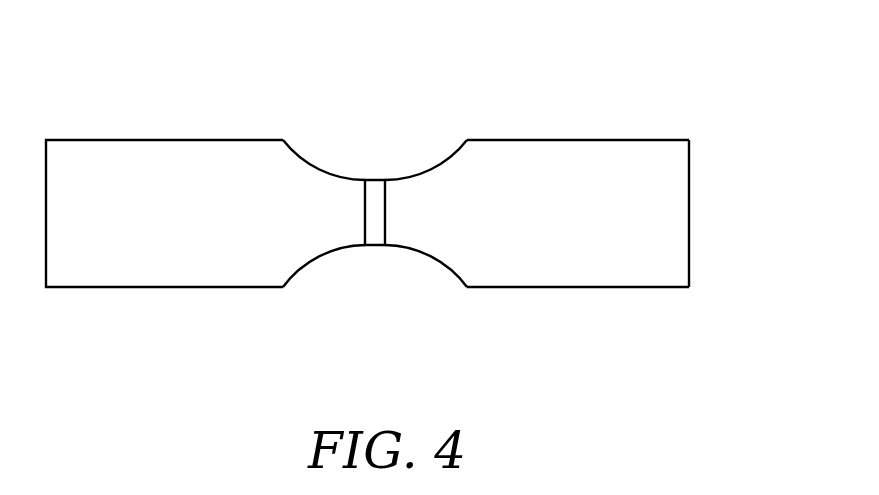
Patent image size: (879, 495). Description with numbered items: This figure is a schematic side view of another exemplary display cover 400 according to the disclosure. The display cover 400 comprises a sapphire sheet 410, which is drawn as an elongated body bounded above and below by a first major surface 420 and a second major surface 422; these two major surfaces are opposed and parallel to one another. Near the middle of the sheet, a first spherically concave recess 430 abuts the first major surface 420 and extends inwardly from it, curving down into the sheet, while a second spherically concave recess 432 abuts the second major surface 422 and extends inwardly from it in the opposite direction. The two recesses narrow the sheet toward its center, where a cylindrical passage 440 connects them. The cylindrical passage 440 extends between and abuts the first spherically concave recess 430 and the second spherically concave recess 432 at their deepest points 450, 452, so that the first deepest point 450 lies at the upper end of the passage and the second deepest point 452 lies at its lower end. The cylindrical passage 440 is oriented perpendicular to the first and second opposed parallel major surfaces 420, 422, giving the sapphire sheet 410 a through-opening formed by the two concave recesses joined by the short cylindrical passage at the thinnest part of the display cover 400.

The display cover 400 is at (664, 52).
The sapphire sheet 410 is at (423, 217).
The first major surface 420 is at (541, 140).
The second major surface 422 is at (593, 287).
The first spherically concave recess 430 is at (303, 153).
The second spherically concave recess 432 is at (303, 271).
The cylindrical passage 440 is at (365, 219).
The deepest point of first spherically concave recess 450 is at (370, 180).
The deepest point of second spherically concave recess 452 is at (370, 245).